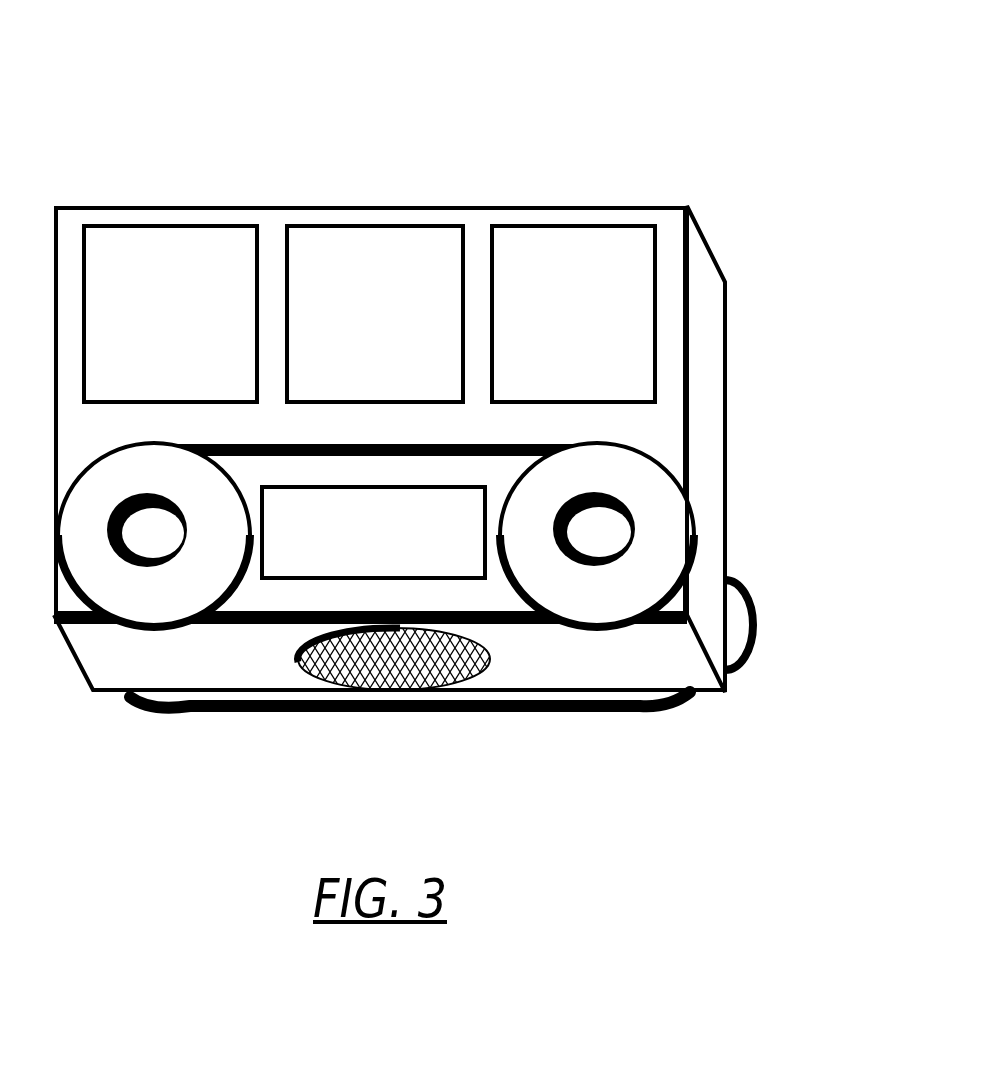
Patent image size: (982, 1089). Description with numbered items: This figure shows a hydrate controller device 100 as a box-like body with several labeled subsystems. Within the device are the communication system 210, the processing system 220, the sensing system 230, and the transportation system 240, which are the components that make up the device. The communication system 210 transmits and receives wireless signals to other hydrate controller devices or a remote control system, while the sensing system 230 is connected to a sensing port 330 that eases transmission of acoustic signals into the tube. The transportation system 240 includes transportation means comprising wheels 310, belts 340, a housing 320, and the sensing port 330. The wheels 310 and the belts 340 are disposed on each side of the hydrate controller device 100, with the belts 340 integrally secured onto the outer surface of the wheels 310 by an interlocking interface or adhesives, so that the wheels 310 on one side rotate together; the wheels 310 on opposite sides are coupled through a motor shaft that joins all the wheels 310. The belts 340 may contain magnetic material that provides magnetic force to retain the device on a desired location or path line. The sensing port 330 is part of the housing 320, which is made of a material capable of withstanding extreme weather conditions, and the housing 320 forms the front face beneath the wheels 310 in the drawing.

The hydrate controller device 100 is at (425, 147).
The communication system 210 is at (155, 351).
The processing system 220 is at (358, 351).
The sensing system 230 is at (559, 338).
The transportation system 240 is at (357, 555).
The wheels 310 is at (110, 565).
The housing 320 is at (210, 647).
The sensing port 330 is at (390, 658).
The belts 340 is at (637, 713).